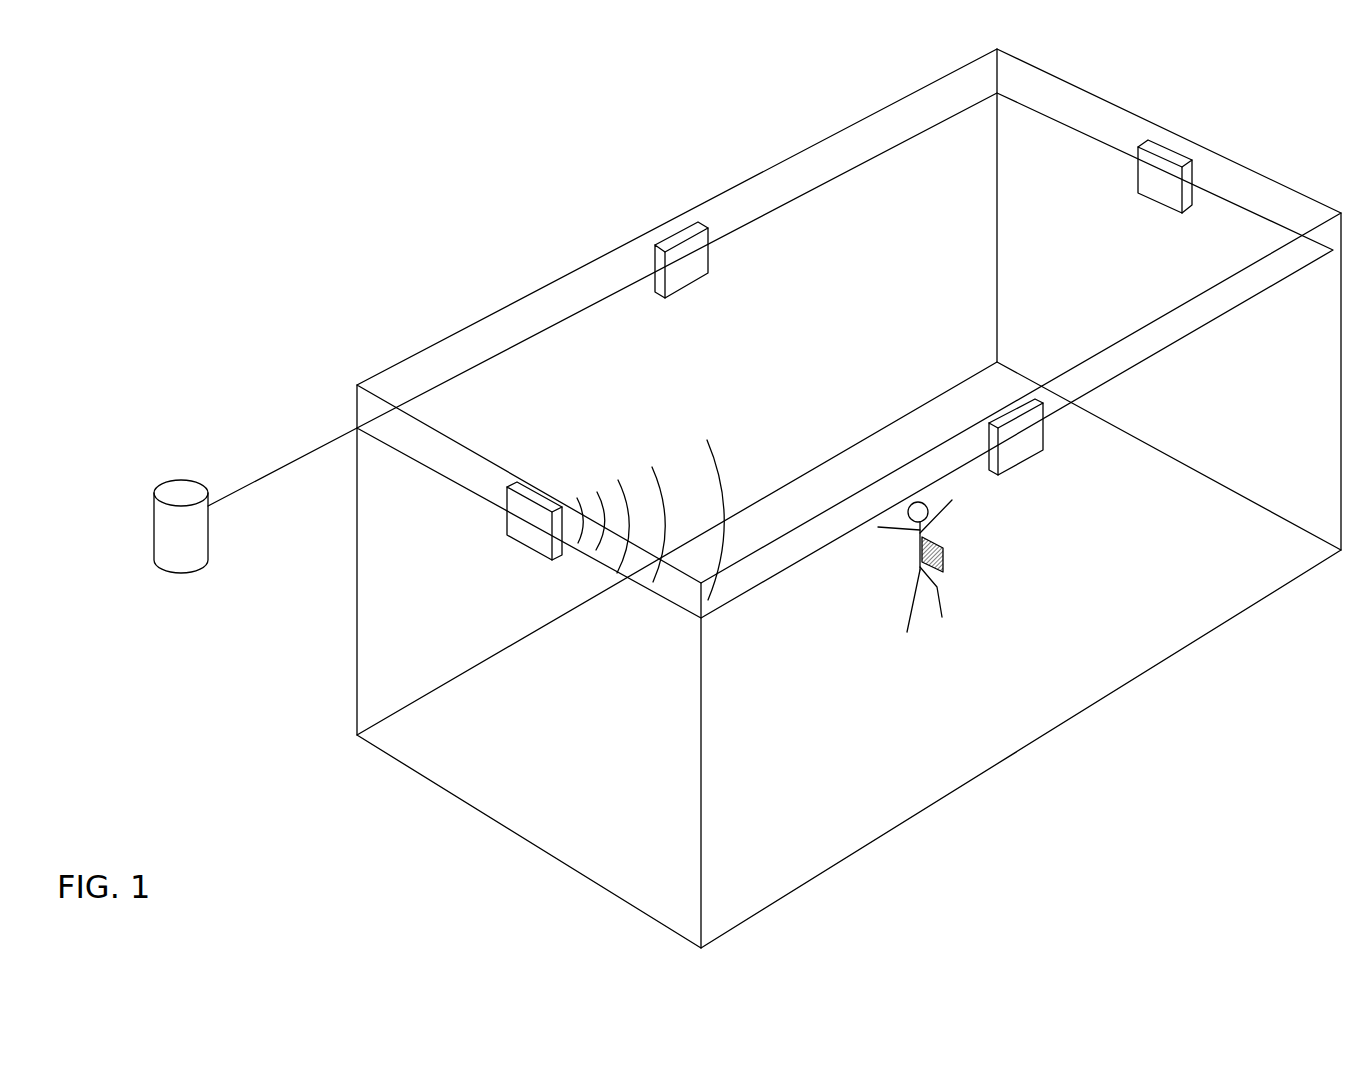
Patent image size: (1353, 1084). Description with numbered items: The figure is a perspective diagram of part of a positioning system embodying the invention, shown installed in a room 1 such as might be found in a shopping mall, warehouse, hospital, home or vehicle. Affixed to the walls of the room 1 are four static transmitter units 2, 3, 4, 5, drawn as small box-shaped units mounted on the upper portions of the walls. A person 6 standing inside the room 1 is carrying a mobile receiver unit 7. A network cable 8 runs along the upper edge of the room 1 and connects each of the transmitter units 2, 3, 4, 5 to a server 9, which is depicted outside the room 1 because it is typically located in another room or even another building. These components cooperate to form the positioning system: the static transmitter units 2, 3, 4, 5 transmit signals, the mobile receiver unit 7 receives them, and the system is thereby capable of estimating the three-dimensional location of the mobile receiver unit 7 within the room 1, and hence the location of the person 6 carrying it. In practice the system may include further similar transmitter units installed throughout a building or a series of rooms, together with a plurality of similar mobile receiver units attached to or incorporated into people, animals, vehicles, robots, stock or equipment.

The room 1 is at (490, 767).
The static transmitter unit 2 is at (687, 252).
The static transmitter unit 3 is at (528, 525).
The static transmitter unit 4 is at (1158, 175).
The static transmitter unit 5 is at (1022, 440).
The person 6 is at (900, 530).
The mobile receiver unit 7 is at (943, 555).
The network cable 8 is at (539, 335).
The server 9 is at (180, 493).